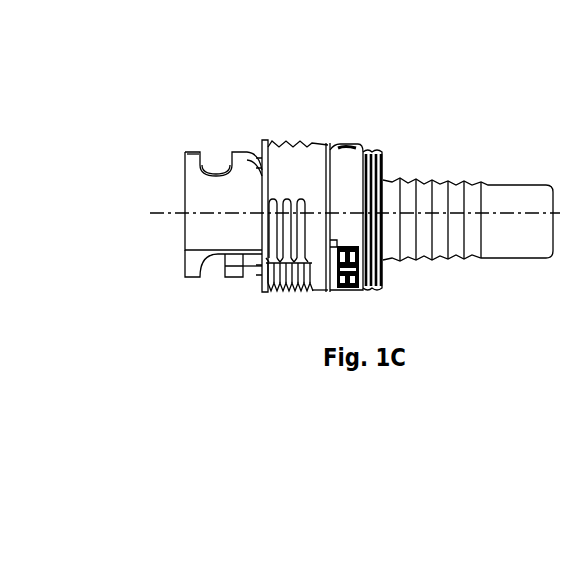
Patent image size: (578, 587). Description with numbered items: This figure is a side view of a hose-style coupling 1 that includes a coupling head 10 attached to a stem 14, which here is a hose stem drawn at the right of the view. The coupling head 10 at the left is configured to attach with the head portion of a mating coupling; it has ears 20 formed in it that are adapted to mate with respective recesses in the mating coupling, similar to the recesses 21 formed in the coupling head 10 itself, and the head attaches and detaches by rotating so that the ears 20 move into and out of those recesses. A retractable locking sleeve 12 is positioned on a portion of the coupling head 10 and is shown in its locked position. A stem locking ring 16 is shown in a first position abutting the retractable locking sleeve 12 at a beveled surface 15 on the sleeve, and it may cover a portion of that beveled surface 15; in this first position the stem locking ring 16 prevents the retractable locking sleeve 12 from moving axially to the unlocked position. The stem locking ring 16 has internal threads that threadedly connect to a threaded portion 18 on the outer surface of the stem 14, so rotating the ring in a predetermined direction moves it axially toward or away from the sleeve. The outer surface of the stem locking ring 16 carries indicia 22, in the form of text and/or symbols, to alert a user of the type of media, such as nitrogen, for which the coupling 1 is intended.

The coupling 1 is at (198, 293).
The coupling head 10 is at (210, 203).
The retractable locking sleeve 12 is at (307, 173).
The stem 14 is at (492, 185).
The beveled surface 15 is at (318, 270).
The stem locking ring 16 is at (352, 145).
The threaded portion 18 is at (380, 155).
The ears 20 is at (193, 151).
The recesses 21 is at (220, 170).
The indicia 22 is at (334, 168).